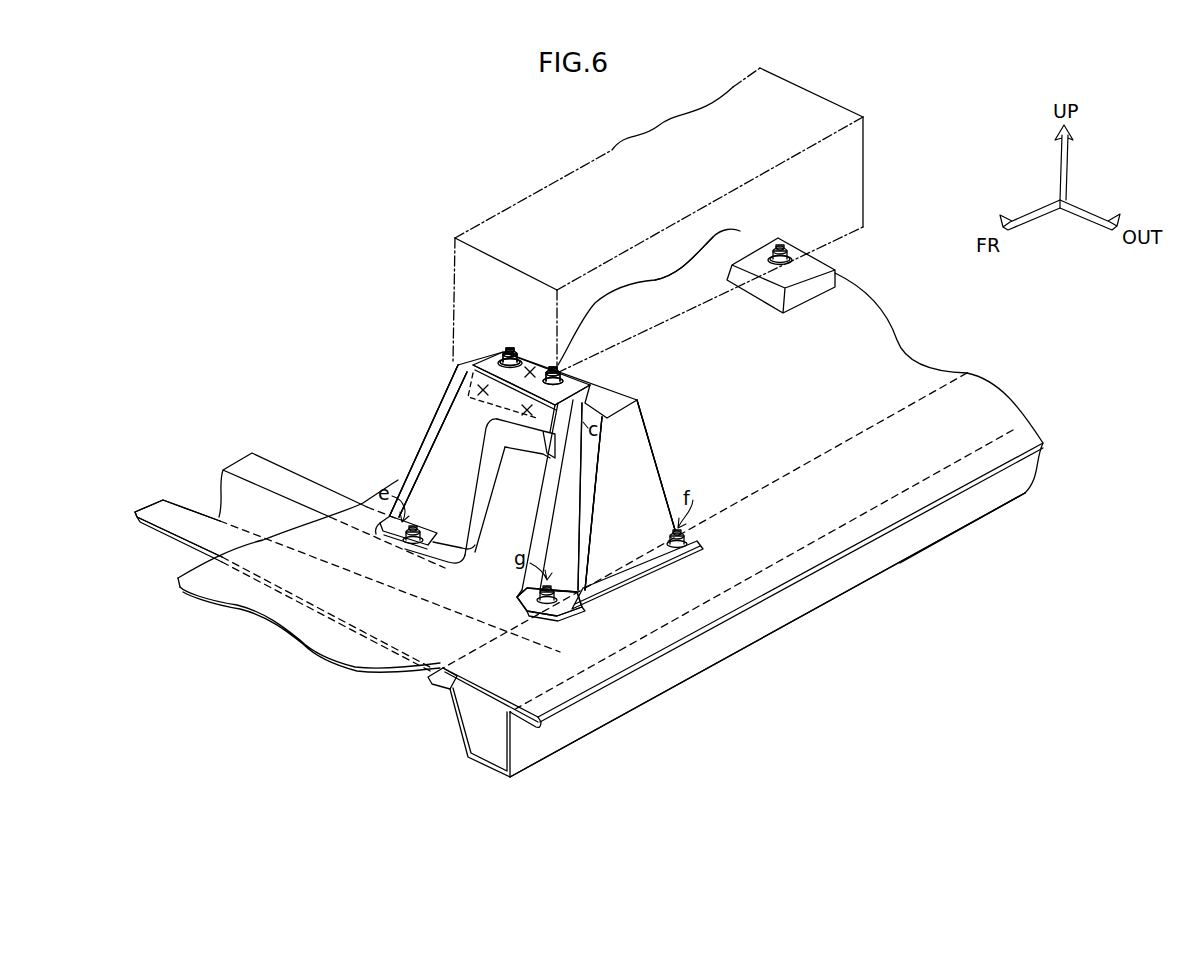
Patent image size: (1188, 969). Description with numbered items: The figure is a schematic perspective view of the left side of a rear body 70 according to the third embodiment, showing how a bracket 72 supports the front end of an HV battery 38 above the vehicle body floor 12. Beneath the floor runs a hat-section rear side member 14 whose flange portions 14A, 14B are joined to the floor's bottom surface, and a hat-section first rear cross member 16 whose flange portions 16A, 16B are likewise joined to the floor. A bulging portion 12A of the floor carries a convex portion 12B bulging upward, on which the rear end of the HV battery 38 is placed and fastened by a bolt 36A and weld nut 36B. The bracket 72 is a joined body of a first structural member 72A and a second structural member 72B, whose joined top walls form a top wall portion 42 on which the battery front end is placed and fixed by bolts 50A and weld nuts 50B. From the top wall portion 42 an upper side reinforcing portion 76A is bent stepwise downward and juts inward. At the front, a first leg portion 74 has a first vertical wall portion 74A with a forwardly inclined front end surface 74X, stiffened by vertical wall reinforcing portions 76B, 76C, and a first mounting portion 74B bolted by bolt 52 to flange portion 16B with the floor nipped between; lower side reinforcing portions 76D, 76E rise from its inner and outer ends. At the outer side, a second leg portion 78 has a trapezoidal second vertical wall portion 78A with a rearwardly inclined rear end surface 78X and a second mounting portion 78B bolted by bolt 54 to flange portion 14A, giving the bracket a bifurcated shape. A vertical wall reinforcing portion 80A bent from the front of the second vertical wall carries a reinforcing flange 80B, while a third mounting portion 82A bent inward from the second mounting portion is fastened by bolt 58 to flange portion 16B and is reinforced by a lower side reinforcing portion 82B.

The vehicle body floor 12 is at (991, 408).
The bulging portion 12A is at (866, 327).
The convex portion 12B is at (840, 262).
The rear side member 14 is at (776, 628).
The flange portion 14A is at (443, 690).
The flange portion 14B is at (525, 726).
The first rear cross member 16 is at (184, 565).
The flange portion 16A is at (190, 517).
The flange portion 16B is at (302, 485).
The bolt 36A is at (786, 244).
The weld nut 36B is at (771, 252).
The HV battery 38 is at (866, 140).
The top wall portion 42 is at (560, 375).
The bolt 50A is at (508, 347).
The weld nut 50B is at (503, 356).
The bolt 52 is at (422, 525).
The bolt 54 is at (672, 532).
The bolt 58 is at (549, 588).
The rear body 70 is at (886, 636).
The bracket 72 is at (681, 388).
The first structural member 72A is at (428, 397).
The second structural member 72B is at (517, 580).
The first leg portion 74 is at (375, 418).
The first vertical wall portion 74A is at (431, 482).
The first mounting portion 74B is at (395, 548).
The front end surface 74X is at (430, 435).
The upper side reinforcing portion 76A is at (465, 365).
The vertical wall reinforcing portion 76B is at (440, 397).
The vertical wall reinforcing portion 76C is at (494, 468).
The lower side reinforcing portion 76D is at (380, 525).
The lower side reinforcing portion 76E is at (430, 560).
The second leg portion 78 is at (692, 489).
The second vertical wall portion 78A is at (640, 467).
The second mounting portion 78B is at (640, 568).
The rear end surface 78X is at (652, 438).
The vertical wall reinforcing portion 80A is at (562, 538).
The reinforcing flange 80B is at (542, 522).
The third mounting portion 82A is at (566, 602).
The lower side reinforcing portion 82B is at (517, 598).